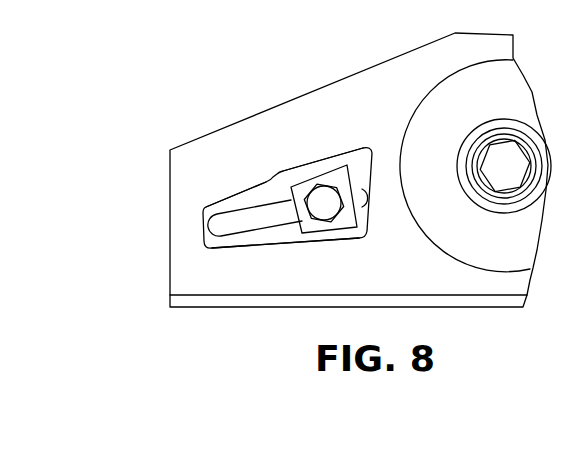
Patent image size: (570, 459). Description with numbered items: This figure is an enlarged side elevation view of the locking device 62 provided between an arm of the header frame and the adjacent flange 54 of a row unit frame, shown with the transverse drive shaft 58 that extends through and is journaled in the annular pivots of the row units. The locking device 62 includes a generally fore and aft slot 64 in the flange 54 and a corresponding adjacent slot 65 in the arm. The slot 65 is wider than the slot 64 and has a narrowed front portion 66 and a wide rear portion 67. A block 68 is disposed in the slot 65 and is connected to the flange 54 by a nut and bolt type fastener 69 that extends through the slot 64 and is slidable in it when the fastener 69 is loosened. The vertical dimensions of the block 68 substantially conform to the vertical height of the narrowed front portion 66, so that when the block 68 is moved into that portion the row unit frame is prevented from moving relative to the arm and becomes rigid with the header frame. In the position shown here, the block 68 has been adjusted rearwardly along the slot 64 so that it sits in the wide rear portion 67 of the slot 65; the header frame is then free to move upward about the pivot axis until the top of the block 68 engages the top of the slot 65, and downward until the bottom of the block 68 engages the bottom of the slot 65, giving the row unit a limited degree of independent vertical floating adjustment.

The locking device 62 is at (192, 186).
The transverse drive shaft 58 is at (498, 148).
The flange 54 is at (240, 239).
The slot 65 is at (288, 241).
The narrowed front portion 66 is at (225, 202).
The wide rear portion 67 is at (298, 169).
The slot 64 is at (229, 212).
The block 68 is at (337, 172).
The nut and bolt type fastener 69 is at (340, 208).